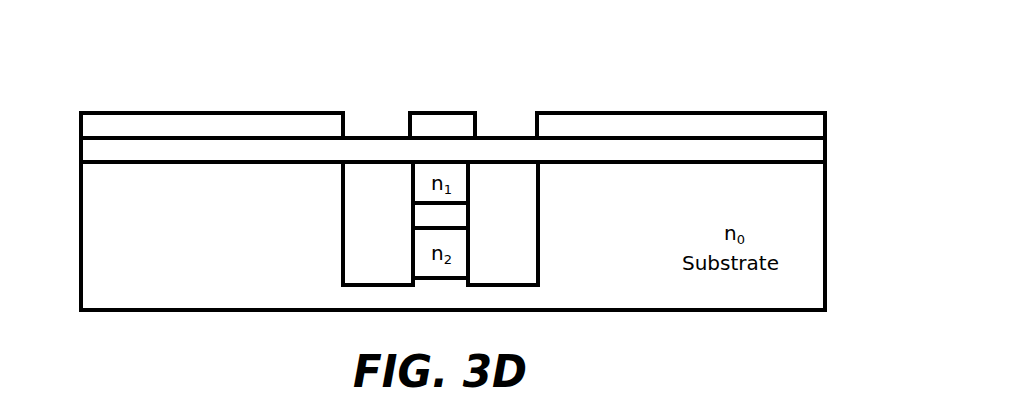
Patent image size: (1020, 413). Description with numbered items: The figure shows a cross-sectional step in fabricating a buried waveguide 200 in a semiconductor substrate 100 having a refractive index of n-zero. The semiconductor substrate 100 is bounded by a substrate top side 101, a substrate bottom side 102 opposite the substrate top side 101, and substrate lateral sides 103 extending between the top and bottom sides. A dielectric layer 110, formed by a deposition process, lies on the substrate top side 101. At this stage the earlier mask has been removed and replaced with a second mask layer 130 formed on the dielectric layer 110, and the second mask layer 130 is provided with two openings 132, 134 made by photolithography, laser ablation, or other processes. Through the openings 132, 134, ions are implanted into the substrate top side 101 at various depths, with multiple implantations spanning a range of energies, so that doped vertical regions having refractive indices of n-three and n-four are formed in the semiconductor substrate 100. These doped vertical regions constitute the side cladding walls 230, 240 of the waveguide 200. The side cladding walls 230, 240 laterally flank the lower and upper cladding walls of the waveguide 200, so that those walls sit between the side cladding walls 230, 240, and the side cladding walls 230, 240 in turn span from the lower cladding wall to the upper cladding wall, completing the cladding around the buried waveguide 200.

The semiconductor substrate 100 is at (137, 296).
The substrate top side 101 is at (135, 160).
The substrate bottom side 102 is at (692, 311).
The substrate lateral sides 103 is at (80, 262).
The dielectric layer 110 is at (218, 148).
The second mask layer 130 is at (275, 118).
The opening 132 is at (368, 102).
The opening 134 is at (511, 112).
The waveguide 200 is at (450, 82).
The side cladding wall 230 is at (341, 225).
The side cladding wall 240 is at (540, 237).